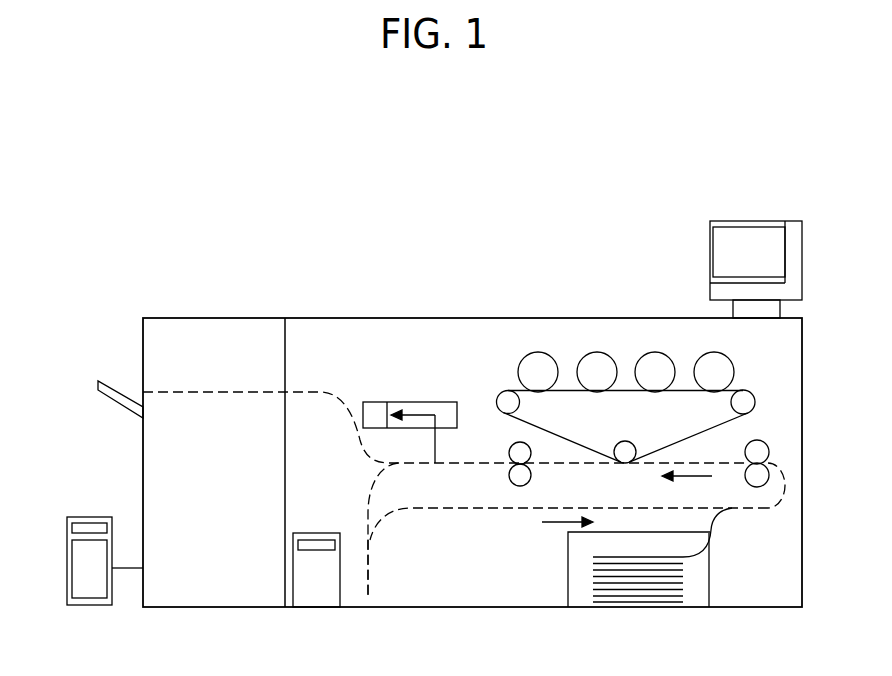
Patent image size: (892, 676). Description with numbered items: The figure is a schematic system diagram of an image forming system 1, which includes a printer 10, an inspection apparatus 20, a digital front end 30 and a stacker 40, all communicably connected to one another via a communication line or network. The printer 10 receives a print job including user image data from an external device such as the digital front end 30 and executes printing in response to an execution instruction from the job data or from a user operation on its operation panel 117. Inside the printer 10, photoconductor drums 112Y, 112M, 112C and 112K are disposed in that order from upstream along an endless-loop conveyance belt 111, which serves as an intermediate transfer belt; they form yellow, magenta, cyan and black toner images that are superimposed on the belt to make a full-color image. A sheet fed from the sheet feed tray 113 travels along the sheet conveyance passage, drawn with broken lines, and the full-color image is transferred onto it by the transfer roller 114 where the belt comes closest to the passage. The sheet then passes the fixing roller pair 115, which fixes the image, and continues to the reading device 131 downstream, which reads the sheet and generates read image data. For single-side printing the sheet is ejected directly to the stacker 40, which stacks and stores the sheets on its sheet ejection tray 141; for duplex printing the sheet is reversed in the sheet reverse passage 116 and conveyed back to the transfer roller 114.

The image forming system 1 is at (188, 164).
The printer 10 is at (316, 317).
The inspection apparatus 20 is at (317, 533).
The digital front end (DFE) 30 is at (88, 517).
The stacker 40 is at (213, 317).
The conveyance belt 111 is at (553, 428).
The photoconductor drum (black) 112K is at (537, 352).
The photoconductor drum (cyan) 112C is at (596, 352).
The photoconductor drum (magenta) 112M is at (655, 352).
The photoconductor drum (yellow) 112Y is at (712, 352).
The sheet feed tray 113 is at (578, 593).
The transfer roller 114 is at (624, 441).
The fixing roller pair 115 is at (509, 451).
The sheet reverse passage 116 is at (370, 573).
The operation panel 117 is at (786, 221).
The reading device 131 is at (375, 402).
The sheet ejection tray 141 is at (109, 400).